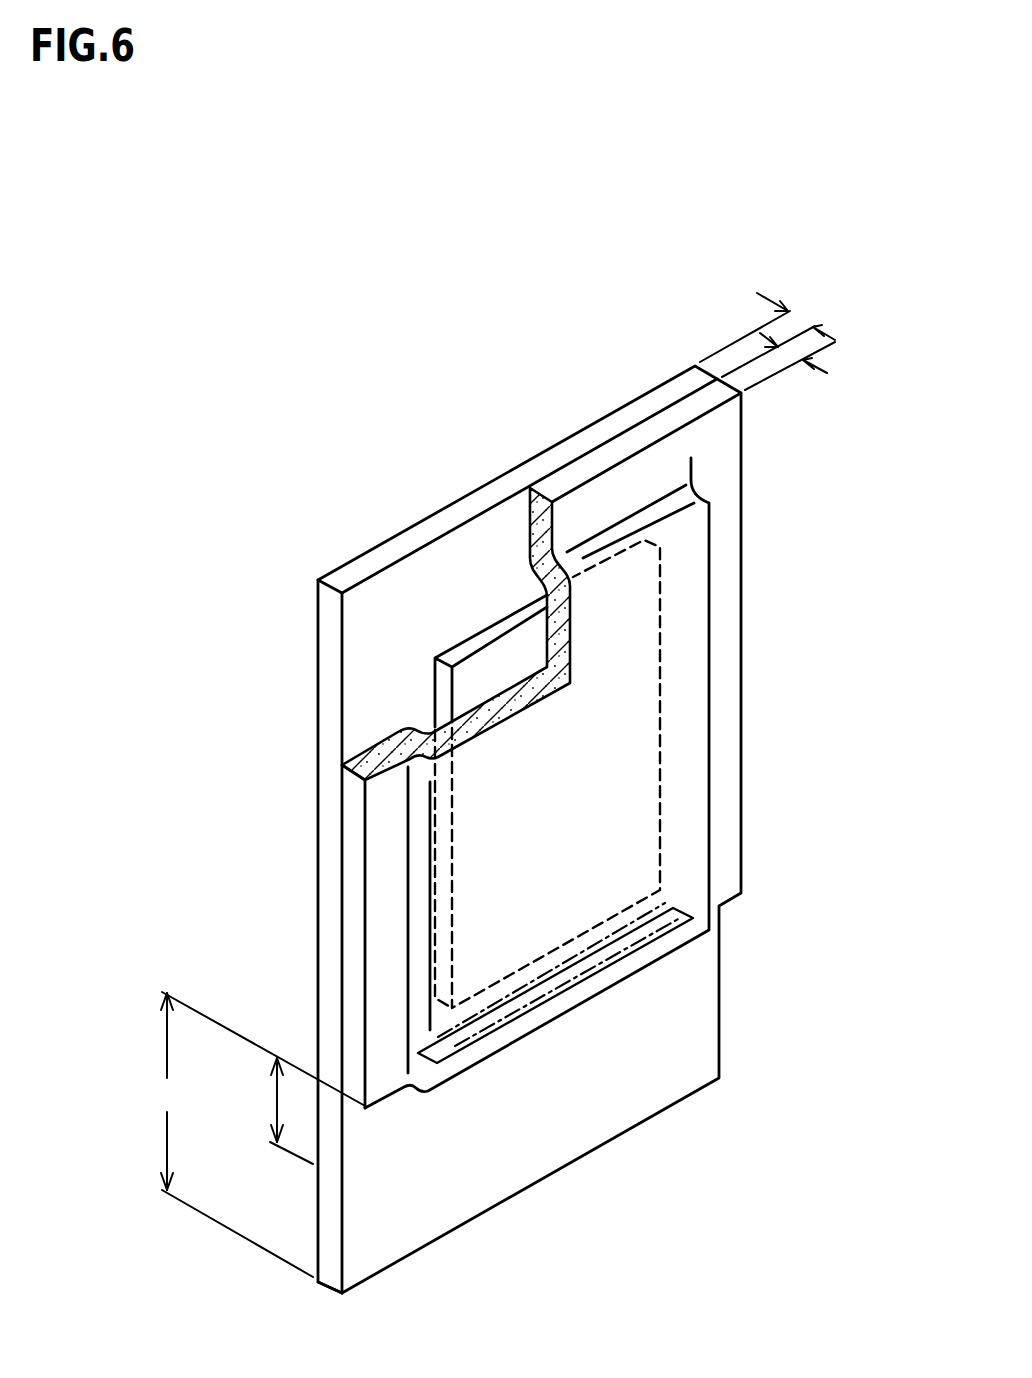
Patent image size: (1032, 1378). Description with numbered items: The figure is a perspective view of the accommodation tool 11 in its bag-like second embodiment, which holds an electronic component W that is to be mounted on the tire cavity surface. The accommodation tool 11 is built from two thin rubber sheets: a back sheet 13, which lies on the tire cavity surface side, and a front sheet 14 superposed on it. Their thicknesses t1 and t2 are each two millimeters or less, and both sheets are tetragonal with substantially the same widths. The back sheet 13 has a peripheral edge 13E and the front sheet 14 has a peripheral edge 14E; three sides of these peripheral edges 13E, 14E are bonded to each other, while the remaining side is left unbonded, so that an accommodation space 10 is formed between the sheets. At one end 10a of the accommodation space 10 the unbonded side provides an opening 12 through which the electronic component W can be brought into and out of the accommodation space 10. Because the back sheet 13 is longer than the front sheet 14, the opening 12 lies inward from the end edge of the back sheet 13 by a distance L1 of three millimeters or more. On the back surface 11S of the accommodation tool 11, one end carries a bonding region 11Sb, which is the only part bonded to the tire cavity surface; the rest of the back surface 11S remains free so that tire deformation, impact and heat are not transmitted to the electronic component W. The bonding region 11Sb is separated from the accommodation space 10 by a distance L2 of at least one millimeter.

The accommodation space 10 is at (547, 641).
The one end of the accommodation space 10a is at (590, 978).
The accommodation tool 11 is at (633, 357).
The back surface 11S is at (318, 876).
The bonding region 11Sb is at (284, 1255).
The opening 12 is at (633, 1056).
The back sheet 13 is at (457, 567).
The peripheral edge of the back sheet 13E is at (430, 718).
The front sheet 14 is at (527, 525).
The peripheral edge of the front sheet 14E is at (456, 578).
The electronic component W is at (463, 640).
The thickness of the back sheet t1 is at (800, 316).
The thickness of the front sheet t2 is at (793, 353).
The distance from the back sheet end edge to the opening L1 is at (258, 1134).
The distance between the bonding region and the accommodation space L2 is at (274, 1111).